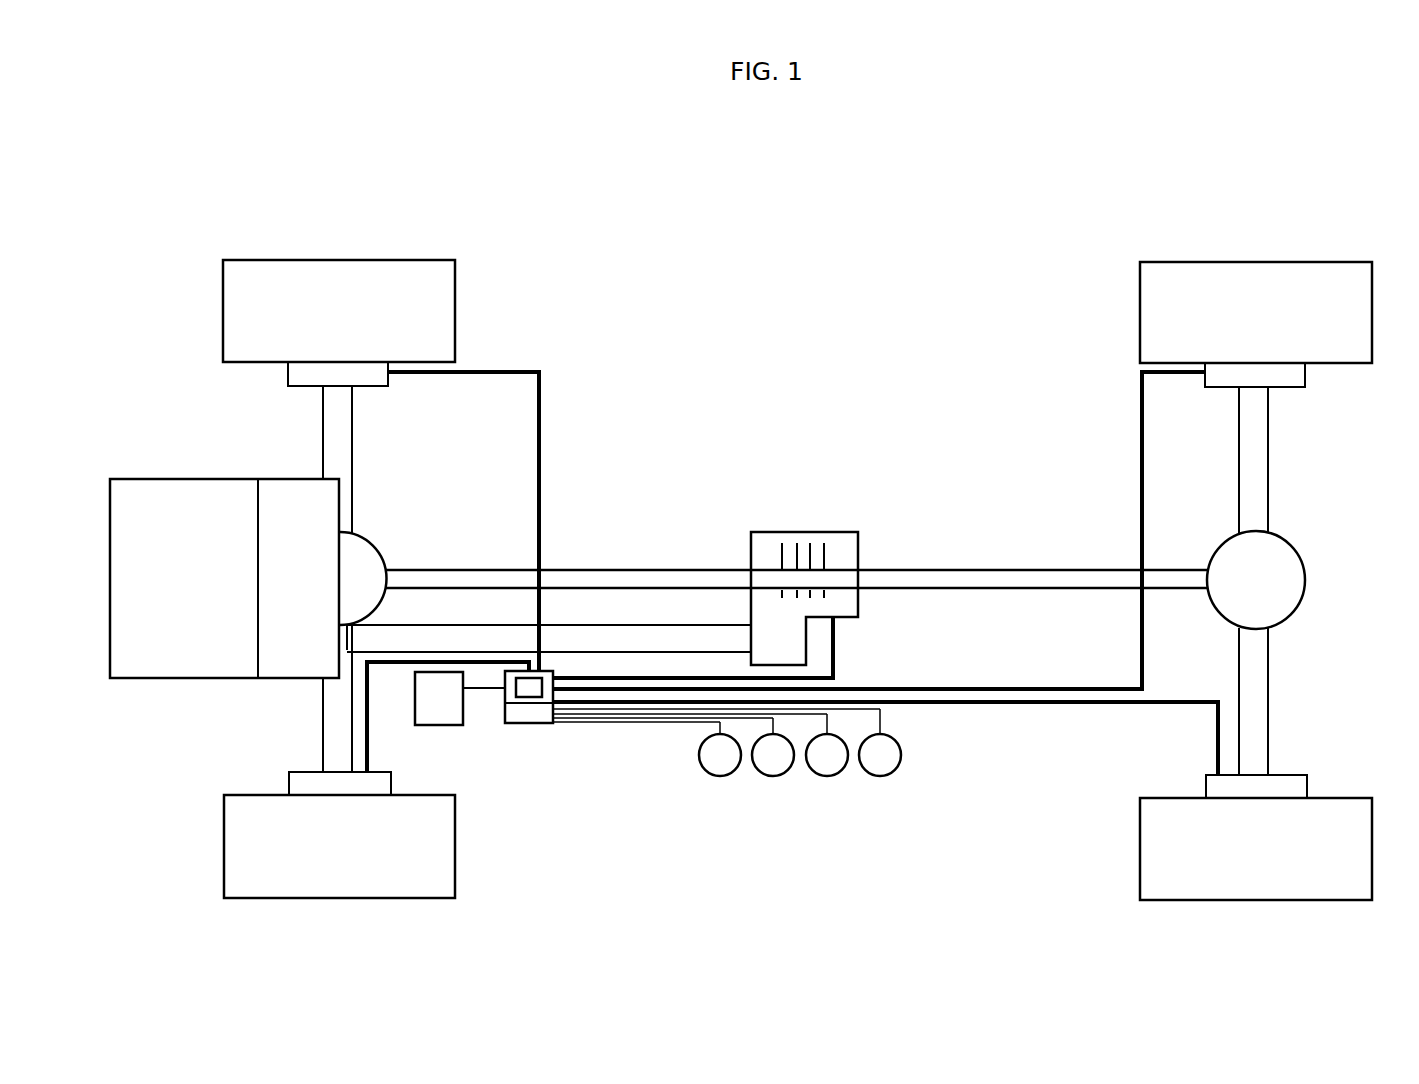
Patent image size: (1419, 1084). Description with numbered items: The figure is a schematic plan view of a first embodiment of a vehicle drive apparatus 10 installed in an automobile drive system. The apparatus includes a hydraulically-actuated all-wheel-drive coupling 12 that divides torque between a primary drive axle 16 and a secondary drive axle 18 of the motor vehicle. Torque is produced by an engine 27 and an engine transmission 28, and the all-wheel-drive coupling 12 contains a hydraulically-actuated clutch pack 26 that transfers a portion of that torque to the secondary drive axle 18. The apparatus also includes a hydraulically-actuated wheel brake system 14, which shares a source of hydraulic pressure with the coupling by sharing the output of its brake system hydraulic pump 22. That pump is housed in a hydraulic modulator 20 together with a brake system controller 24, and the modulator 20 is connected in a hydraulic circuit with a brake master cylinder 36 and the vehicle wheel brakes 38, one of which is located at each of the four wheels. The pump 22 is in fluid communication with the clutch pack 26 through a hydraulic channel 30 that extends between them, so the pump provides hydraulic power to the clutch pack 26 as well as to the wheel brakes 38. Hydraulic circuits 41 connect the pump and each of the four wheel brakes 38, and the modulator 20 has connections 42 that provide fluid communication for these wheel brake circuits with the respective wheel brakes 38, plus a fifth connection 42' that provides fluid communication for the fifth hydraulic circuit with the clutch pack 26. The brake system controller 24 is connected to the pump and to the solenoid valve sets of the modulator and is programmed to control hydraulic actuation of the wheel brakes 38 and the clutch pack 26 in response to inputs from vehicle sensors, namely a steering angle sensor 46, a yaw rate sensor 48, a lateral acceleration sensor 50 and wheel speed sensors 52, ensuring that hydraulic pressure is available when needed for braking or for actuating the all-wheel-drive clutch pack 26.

The vehicle drive apparatus 10 is at (605, 240).
The all-wheel-drive coupling 12 is at (837, 550).
The wheel brake system 14 is at (553, 799).
The hydraulic modulator 20 is at (553, 799).
The primary drive axle 16 is at (1253, 504).
The secondary drive axle 18 is at (340, 454).
The brake system hydraulic pump 22 is at (537, 690).
The brake system controller 24 is at (517, 712).
The clutch pack 26 is at (812, 555).
The engine 27 is at (248, 566).
The engine transmission 28 is at (272, 645).
The hydraulic channel 30 is at (835, 656).
The brake master cylinder 36 is at (436, 718).
The wheel brakes 38 is at (315, 378).
The hydraulic circuits 41 is at (547, 390).
The connections 42 is at (707, 699).
The fifth connection 42' is at (615, 647).
The steering angle sensor 46 is at (722, 765).
The yaw rate sensor 48 is at (775, 768).
The lateral acceleration sensor 50 is at (826, 766).
The wheel speed sensors 52 is at (878, 766).